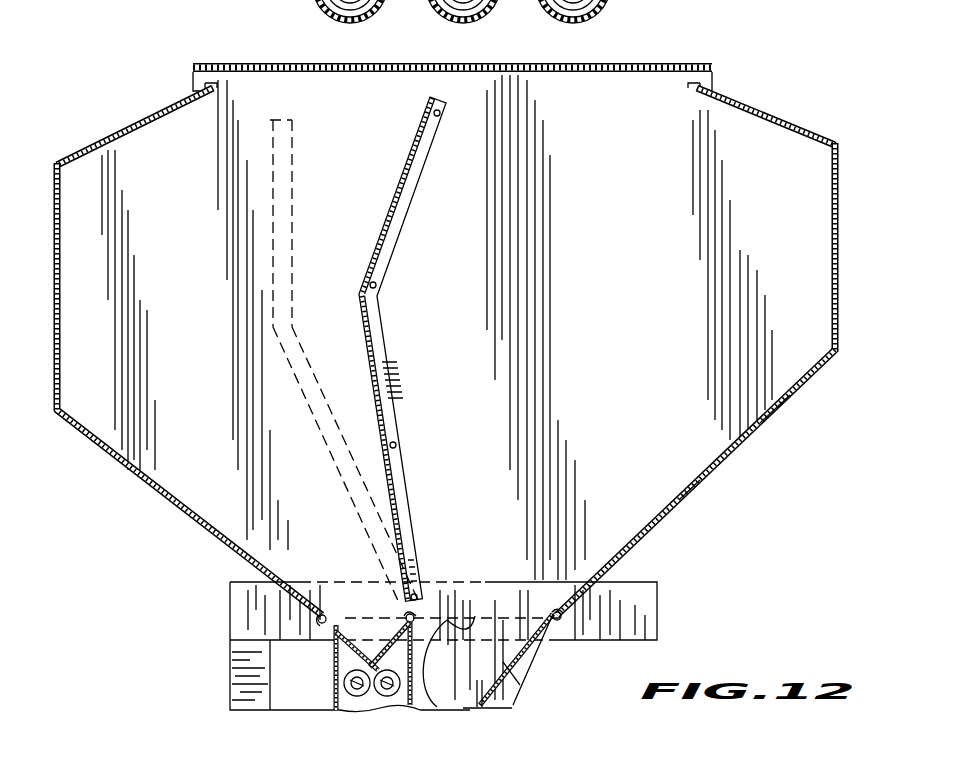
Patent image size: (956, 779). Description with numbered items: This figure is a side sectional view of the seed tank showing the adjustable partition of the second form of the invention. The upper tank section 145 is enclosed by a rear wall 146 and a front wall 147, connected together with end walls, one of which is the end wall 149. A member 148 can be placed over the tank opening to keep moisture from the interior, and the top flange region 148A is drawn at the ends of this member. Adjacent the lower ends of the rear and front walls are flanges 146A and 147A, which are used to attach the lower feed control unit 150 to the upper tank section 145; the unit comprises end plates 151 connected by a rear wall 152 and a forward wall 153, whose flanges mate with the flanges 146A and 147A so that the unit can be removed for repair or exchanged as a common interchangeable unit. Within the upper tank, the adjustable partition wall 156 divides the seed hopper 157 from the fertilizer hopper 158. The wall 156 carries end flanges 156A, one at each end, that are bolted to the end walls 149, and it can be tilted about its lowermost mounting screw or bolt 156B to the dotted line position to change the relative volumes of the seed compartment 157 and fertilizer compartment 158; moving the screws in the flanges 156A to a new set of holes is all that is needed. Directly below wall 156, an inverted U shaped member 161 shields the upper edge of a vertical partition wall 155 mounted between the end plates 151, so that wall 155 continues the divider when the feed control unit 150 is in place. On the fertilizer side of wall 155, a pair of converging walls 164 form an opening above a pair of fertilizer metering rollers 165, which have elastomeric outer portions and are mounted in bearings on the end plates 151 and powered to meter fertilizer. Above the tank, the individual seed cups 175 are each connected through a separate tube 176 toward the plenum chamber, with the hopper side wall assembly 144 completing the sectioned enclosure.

The hopper side wall assembly 144 is at (656, 542).
The upper tank section 145 is at (758, 437).
The rear wall 146 is at (663, 517).
The flange 146A is at (560, 620).
The front wall 147 is at (185, 508).
The flange 147A is at (313, 617).
The member 148 is at (637, 90).
The top plate flange 148A is at (245, 67).
The end wall 149 is at (803, 300).
The lower feed control unit 150 is at (630, 645).
The end plates 151 is at (505, 683).
The rear wall 152 is at (503, 662).
The forward wall 153 is at (330, 683).
The vertical partition wall 155 is at (437, 707).
The adjustable partition wall 156 is at (377, 357).
The end flanges 156A is at (400, 443).
The lowermost mounting screw or bolt 156B is at (467, 563).
The seed hopper 157 is at (725, 163).
The fertilizer hopper 158 is at (152, 168).
The inverted U shaped member 161 is at (407, 613).
The converging walls 164 is at (447, 620).
The fertilizer metering rollers 165 is at (368, 710).
The seed cups 175 is at (418, 0).
The tube 176 is at (537, 7).